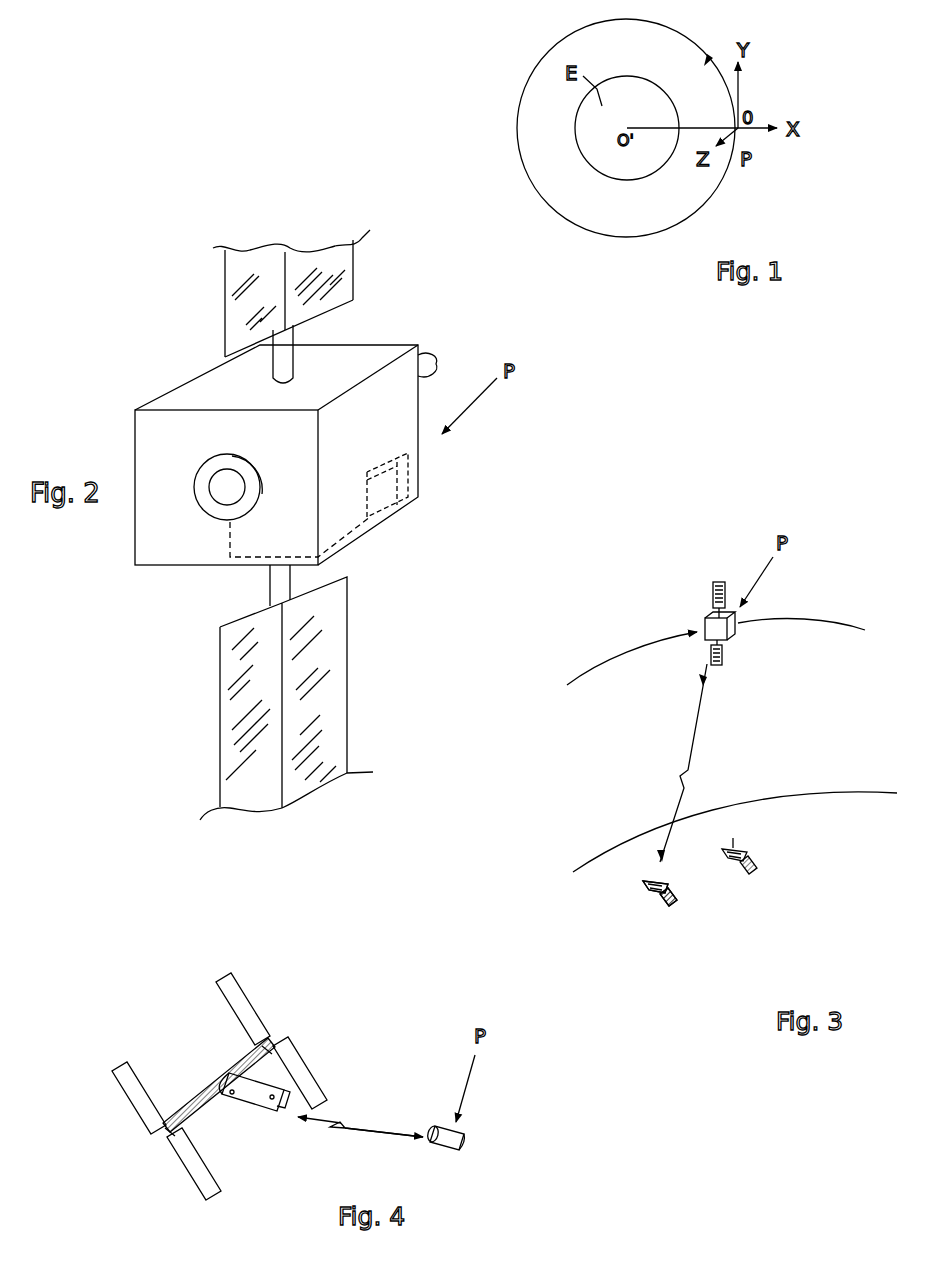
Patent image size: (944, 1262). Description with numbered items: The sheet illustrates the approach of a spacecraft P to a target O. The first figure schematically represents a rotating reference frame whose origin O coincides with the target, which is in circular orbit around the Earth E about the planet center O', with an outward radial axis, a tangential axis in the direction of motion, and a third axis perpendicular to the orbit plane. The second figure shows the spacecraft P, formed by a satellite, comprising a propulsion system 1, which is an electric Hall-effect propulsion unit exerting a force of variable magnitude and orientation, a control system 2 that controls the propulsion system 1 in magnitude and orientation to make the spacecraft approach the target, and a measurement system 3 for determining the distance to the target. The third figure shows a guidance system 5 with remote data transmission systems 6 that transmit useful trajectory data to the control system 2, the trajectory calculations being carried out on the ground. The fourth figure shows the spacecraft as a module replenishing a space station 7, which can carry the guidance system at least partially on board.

In FIG. 2, the propulsion system 1 is at (215, 513).
In FIG. 2, the control system 2 is at (385, 488).
In FIG. 2, the measurement system 3 is at (435, 360).
In FIG. 3, the guidance system 5 is at (628, 913).
In FIG. 3, the remote data transmission systems 6 is at (663, 907).
In FIG. 4, the space station 7 is at (198, 1054).